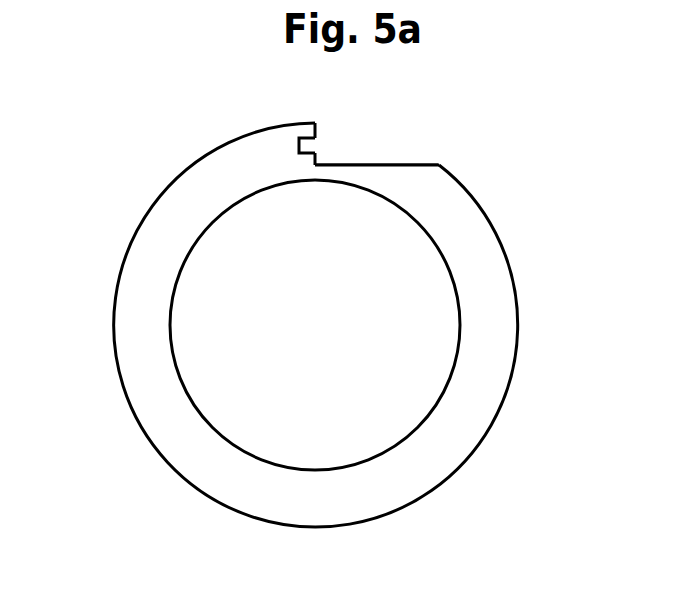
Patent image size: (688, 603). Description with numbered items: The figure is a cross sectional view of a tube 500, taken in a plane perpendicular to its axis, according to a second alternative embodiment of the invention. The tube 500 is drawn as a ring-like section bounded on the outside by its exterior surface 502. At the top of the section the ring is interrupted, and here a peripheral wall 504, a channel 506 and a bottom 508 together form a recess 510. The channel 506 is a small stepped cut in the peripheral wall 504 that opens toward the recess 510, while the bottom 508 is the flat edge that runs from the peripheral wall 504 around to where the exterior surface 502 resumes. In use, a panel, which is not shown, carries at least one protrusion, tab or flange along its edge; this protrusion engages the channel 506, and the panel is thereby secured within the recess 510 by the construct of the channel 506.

The tube 500 is at (140, 169).
The exterior surface 502 is at (113, 314).
The peripheral wall 504 is at (318, 130).
The channel 506 is at (307, 145).
The bottom 508 is at (413, 165).
The recess 510 is at (420, 127).